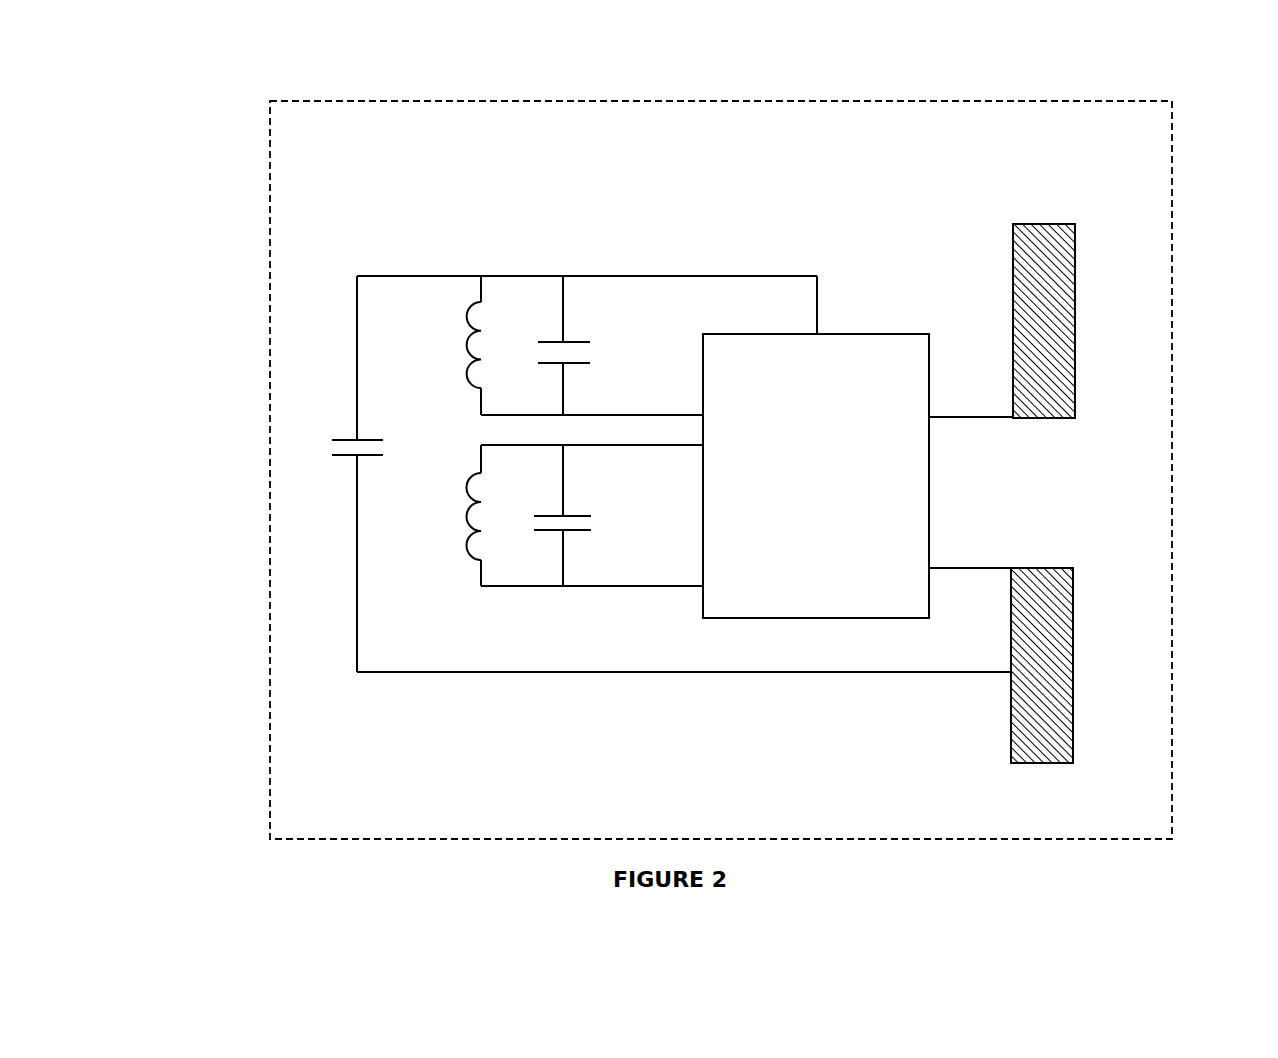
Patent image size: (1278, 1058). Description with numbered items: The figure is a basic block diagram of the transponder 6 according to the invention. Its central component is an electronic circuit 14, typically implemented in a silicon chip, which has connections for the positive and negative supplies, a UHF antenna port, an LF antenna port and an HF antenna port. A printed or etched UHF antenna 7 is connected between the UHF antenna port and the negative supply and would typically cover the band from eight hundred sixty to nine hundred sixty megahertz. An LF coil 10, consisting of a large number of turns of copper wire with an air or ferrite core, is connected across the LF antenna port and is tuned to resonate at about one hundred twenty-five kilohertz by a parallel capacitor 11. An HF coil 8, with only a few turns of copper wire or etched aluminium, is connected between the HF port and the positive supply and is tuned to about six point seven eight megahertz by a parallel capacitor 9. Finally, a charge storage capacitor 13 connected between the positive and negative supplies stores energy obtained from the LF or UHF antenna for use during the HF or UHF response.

The RFID tag / transponder 6 is at (266, 103).
The UHF antenna 7 is at (1080, 372).
The HF coil L2 8 is at (466, 302).
The parallel capacitor C2 9 is at (594, 308).
The LF coil L1 10 is at (457, 562).
The parallel capacitor C1 11 is at (580, 540).
The charge storage capacitor C3 13 is at (322, 461).
The electronic circuit 14 is at (873, 326).